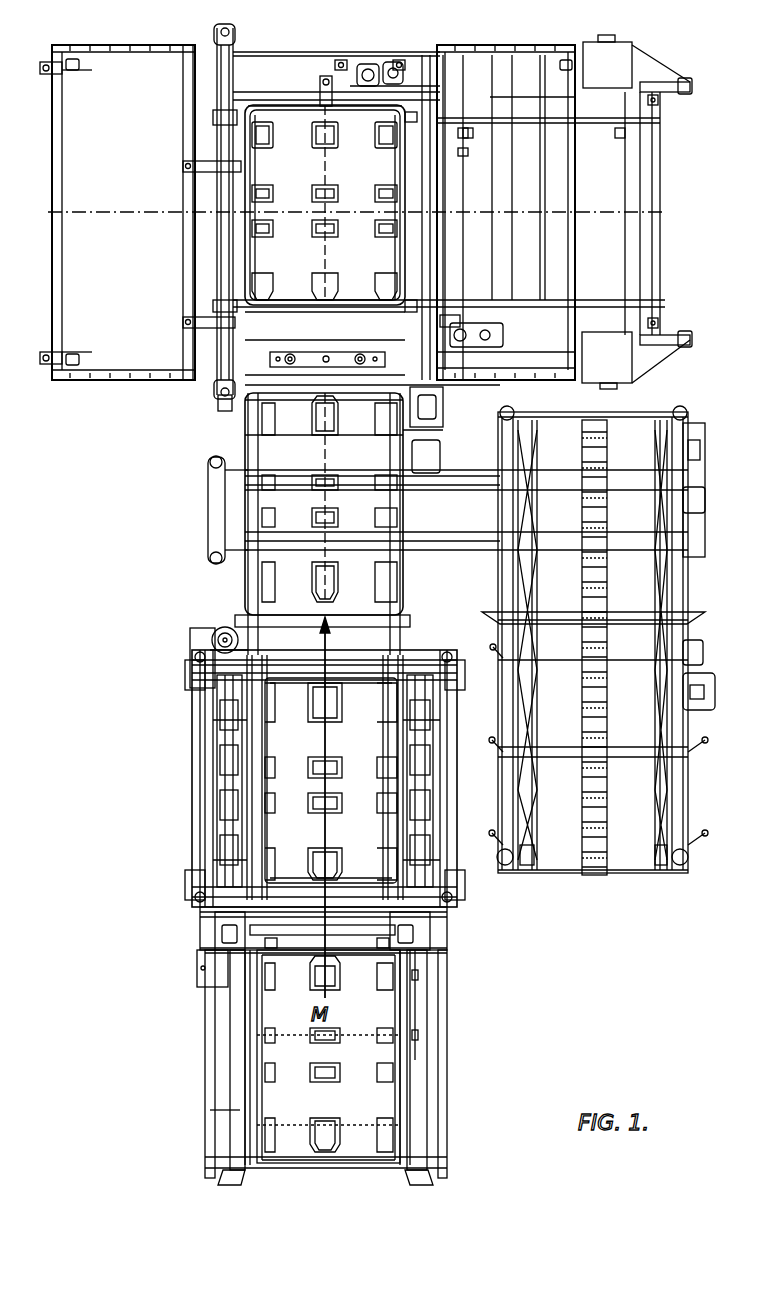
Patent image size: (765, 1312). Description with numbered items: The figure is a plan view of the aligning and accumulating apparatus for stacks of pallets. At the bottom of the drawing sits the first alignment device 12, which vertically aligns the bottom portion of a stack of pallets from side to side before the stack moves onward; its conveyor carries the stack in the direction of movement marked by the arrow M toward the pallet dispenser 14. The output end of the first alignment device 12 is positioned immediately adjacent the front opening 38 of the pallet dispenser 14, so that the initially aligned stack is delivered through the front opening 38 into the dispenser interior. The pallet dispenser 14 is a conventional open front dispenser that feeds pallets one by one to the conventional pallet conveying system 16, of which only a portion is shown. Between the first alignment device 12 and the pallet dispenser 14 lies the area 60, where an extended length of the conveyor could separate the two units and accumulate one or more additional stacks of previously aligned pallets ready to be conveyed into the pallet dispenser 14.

The pallet conveying system 16 is at (174, 402).
The pallet dispenser 14 is at (170, 791).
The area 60 is at (180, 909).
The first alignment device 12 is at (170, 1038).
The front opening 38 is at (350, 925).